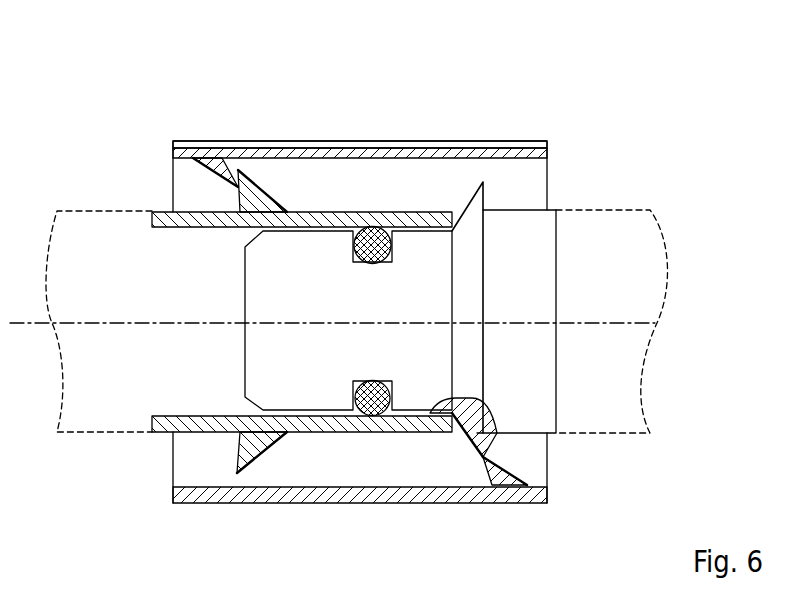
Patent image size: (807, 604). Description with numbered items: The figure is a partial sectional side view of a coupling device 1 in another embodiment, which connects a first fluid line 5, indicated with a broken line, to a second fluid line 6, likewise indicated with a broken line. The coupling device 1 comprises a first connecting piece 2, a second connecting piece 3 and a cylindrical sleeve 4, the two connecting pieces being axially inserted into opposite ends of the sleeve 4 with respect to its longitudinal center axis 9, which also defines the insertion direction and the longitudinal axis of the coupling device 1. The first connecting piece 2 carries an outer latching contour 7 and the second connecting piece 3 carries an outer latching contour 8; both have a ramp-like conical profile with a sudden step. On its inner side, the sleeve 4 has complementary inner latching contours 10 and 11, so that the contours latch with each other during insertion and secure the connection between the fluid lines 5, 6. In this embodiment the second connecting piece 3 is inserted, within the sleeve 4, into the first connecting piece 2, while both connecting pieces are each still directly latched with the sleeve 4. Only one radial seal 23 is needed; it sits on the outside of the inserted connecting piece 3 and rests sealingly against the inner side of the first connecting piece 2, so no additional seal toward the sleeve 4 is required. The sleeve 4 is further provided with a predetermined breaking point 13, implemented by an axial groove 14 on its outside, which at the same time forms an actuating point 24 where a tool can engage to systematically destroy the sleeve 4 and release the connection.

The coupling device 1 is at (637, 137).
The first connecting piece 2 is at (194, 442).
The second connecting piece 3 is at (525, 203).
The sleeve 4 is at (194, 133).
The first fluid line 5 is at (100, 235).
The second fluid line 6 is at (657, 229).
The outer latching contour 7 is at (243, 177).
The outer latching contour 8 is at (469, 193).
The longitudinal center axis 9 is at (25, 325).
The inner latching contour 10 is at (212, 173).
The inner latching contour 11 is at (482, 458).
The predetermined breaking point 13 is at (312, 128).
The axial groove 14 is at (327, 150).
The radial seal 23 is at (371, 226).
The actuating point 24 is at (360, 153).